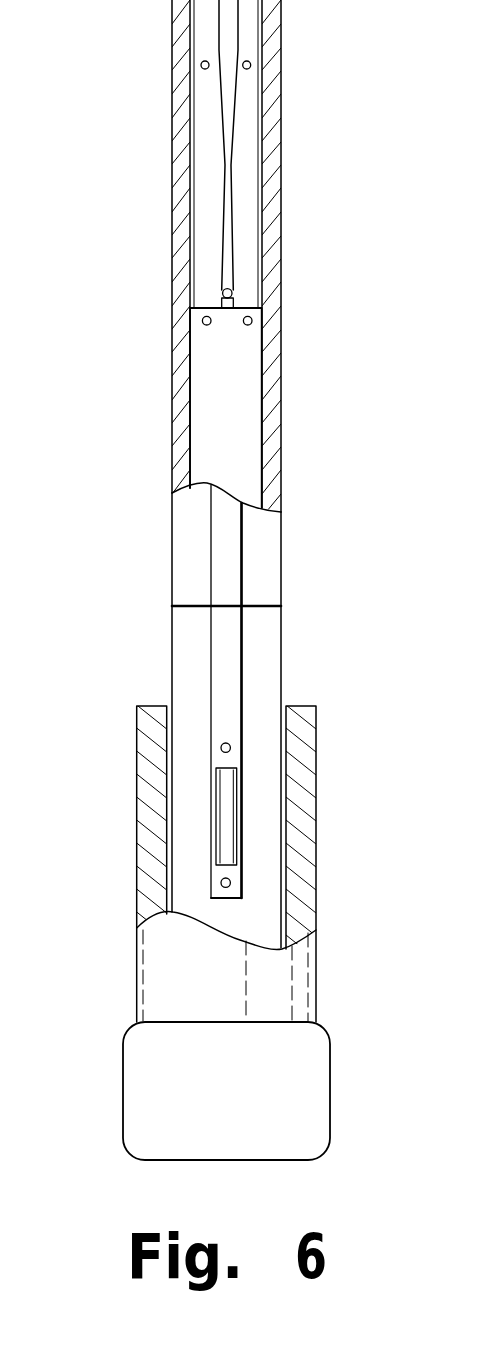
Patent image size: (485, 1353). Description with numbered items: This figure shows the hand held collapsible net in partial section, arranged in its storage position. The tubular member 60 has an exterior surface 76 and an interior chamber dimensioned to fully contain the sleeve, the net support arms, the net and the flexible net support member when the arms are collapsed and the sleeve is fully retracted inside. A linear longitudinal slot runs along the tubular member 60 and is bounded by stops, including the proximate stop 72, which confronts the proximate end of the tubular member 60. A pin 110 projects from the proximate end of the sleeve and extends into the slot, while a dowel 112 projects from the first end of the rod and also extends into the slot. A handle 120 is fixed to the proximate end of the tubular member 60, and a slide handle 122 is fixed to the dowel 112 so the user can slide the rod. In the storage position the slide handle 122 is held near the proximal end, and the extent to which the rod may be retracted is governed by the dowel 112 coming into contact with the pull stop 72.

The tubular member 60 is at (172, 338).
The exterior surface 76 is at (172, 645).
The dowel 112 is at (231, 748).
The proximate stop 72 is at (226, 899).
The pin 110 is at (231, 881).
The slide handle 122 is at (137, 967).
The handle 120 is at (123, 1094).